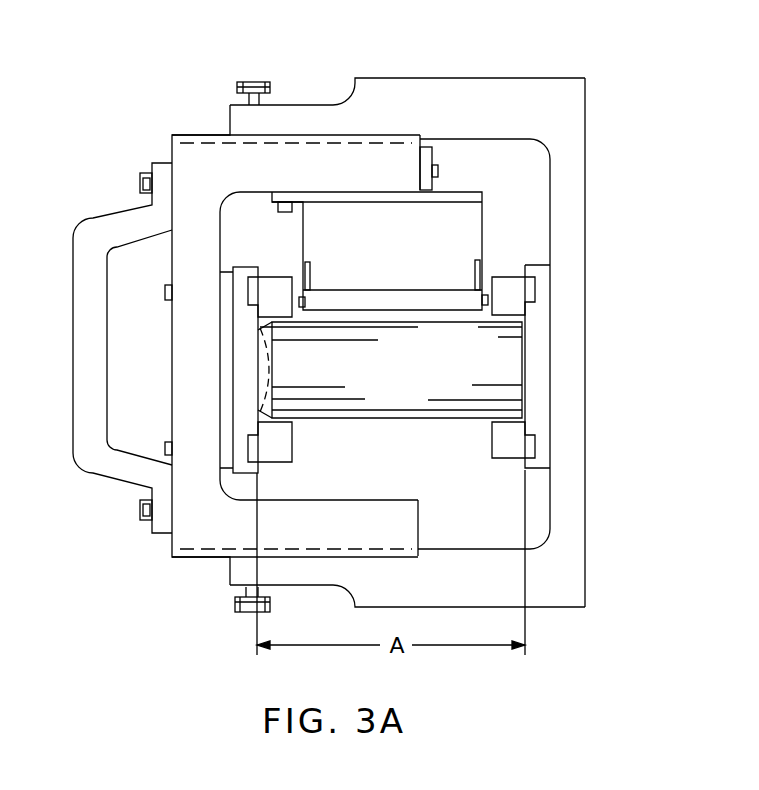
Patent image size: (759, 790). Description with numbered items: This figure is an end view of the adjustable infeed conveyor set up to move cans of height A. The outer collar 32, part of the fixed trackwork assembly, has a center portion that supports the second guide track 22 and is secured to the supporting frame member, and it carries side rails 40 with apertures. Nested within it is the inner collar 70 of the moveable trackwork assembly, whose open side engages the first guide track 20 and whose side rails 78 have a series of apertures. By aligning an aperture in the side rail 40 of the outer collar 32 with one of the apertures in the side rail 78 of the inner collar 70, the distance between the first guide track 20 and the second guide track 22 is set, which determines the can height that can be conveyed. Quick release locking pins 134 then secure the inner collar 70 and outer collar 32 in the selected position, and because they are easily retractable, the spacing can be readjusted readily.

The first guide track 20 is at (245, 357).
The second guide track 22 is at (542, 375).
The outer collar 32 is at (570, 76).
The side rail 40 is at (418, 92).
The inner collar 70 is at (183, 330).
The side rail 78 is at (248, 155).
The quick release locking pin 134 is at (250, 81).